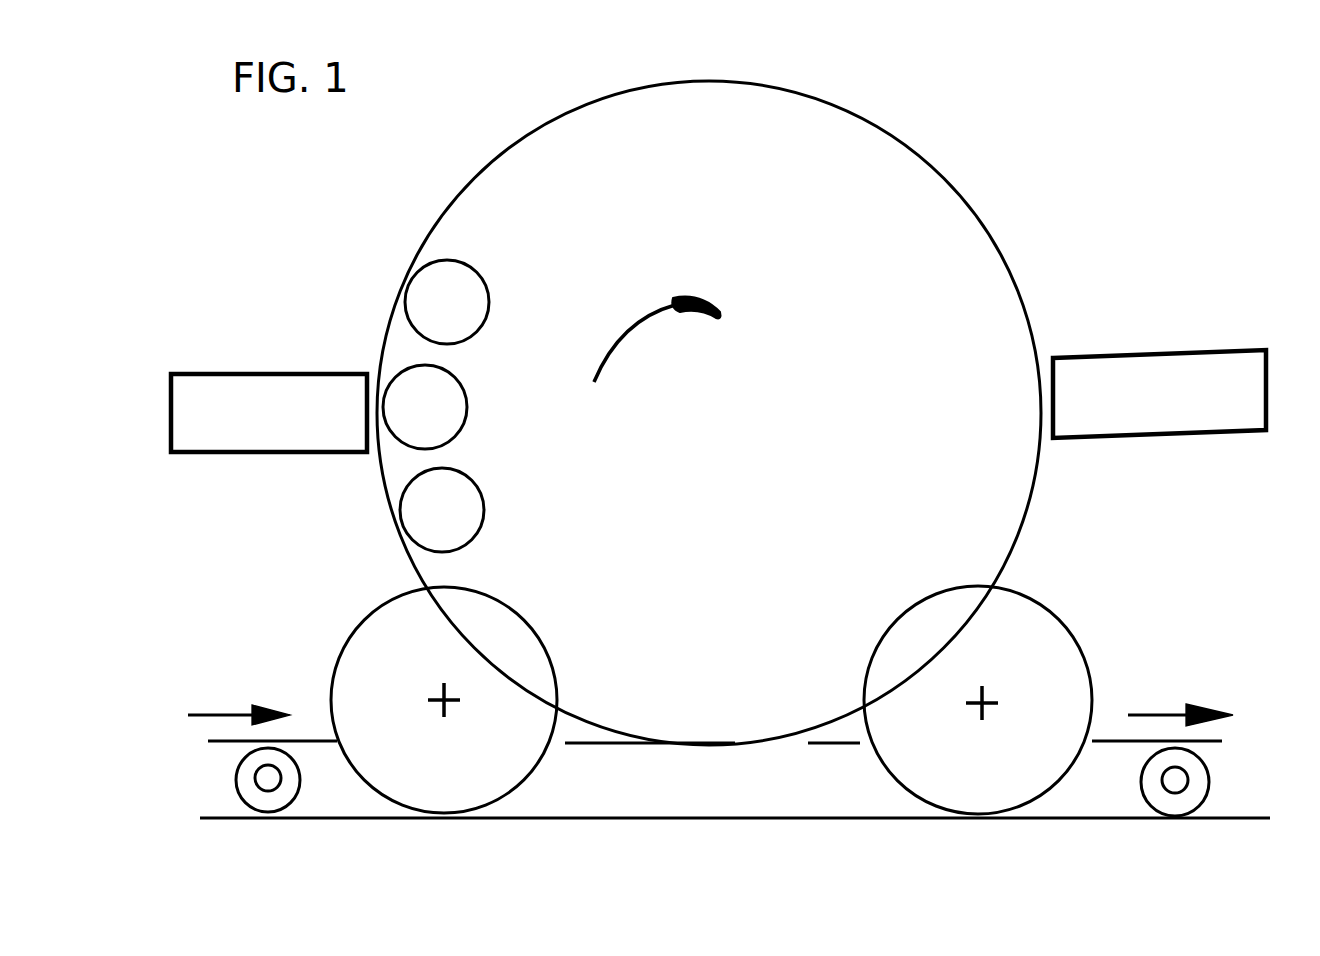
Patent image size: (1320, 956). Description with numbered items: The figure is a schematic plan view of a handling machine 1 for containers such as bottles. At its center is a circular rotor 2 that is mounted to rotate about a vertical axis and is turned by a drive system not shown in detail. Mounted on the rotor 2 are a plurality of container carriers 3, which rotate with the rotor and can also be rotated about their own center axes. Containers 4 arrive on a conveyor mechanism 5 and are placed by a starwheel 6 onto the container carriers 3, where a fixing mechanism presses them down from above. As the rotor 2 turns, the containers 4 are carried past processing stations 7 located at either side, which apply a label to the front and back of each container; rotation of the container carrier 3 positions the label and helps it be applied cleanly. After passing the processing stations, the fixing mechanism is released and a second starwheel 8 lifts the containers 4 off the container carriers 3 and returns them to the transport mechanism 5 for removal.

The handling machine 1 is at (1048, 194).
The rotor 2 is at (863, 142).
The container carriers 3 is at (468, 297).
The containers 4 is at (290, 797).
The conveyor mechanism 5 is at (221, 800).
The starwheel 6 is at (373, 643).
The processing stations 7 is at (288, 387).
The starwheel 8 is at (1045, 627).